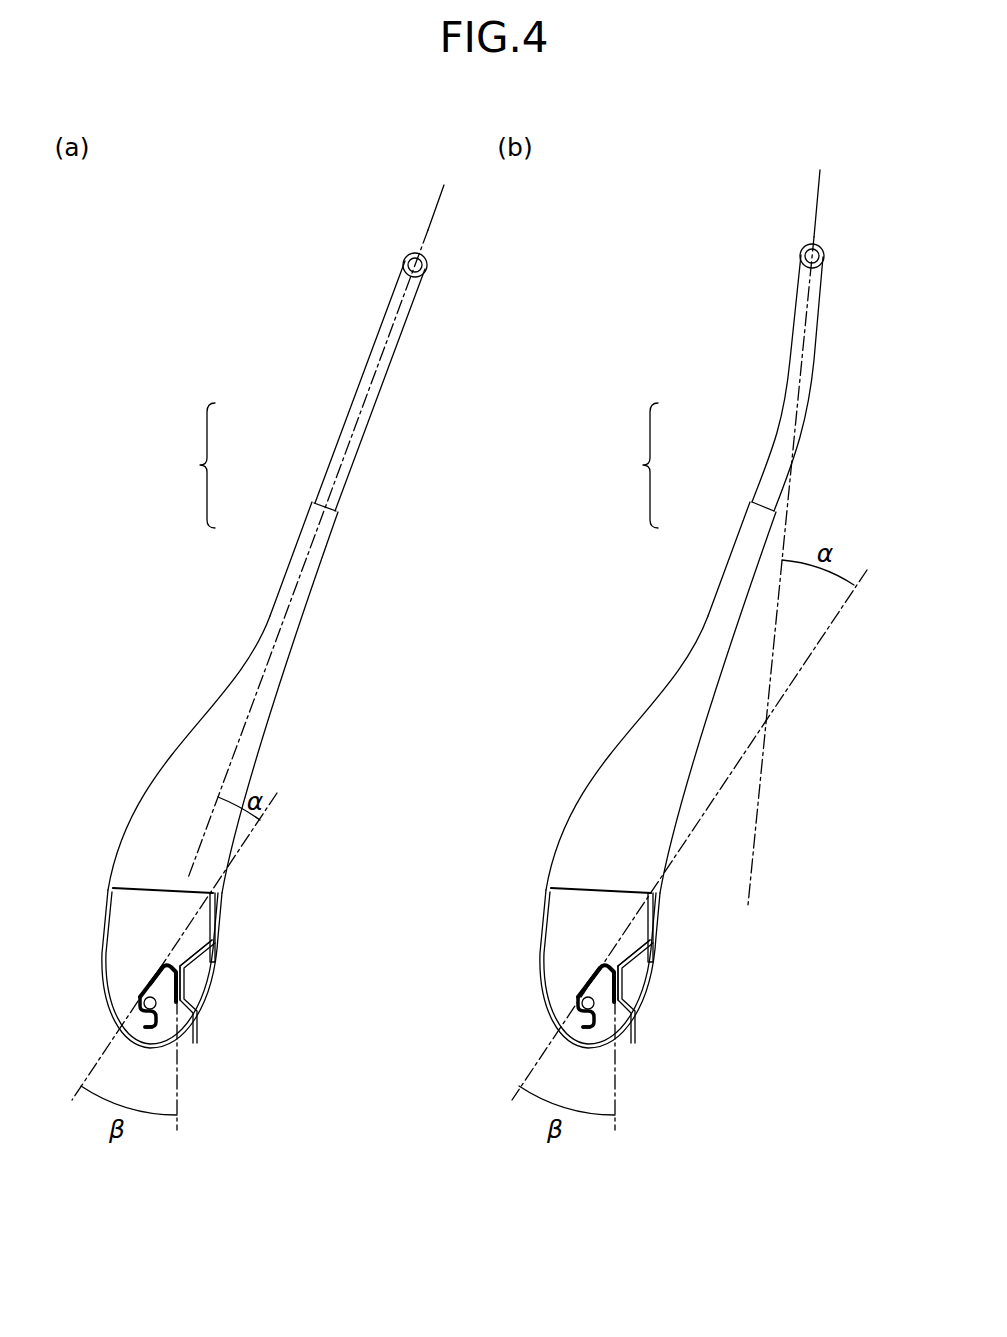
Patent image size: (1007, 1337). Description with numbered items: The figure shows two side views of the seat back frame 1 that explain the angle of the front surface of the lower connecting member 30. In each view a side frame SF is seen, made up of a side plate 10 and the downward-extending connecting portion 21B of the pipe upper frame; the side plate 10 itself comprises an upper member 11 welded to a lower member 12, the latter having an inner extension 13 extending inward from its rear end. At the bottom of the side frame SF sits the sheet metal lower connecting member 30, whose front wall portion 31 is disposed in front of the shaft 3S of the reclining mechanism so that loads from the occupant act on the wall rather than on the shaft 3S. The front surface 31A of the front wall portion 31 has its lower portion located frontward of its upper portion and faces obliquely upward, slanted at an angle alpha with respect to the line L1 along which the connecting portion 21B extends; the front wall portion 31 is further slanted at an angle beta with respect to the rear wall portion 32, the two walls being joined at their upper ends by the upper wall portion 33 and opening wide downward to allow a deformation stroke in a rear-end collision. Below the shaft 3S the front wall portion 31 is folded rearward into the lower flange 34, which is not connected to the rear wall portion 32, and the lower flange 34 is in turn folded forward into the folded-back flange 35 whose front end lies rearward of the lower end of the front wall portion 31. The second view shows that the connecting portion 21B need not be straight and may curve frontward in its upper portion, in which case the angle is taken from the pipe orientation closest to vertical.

The seat back frame 1 is at (214, 604).
The side plate 10 is at (298, 547).
The upper member 11 is at (198, 733).
The lower member 12 is at (203, 1003).
The inner extension 13 is at (192, 962).
The connecting portion 21B is at (343, 443).
The lower connecting member 30 is at (130, 995).
The front wall portion 31 is at (152, 983).
The front surface 31A is at (155, 970).
The rear wall portion 32 is at (179, 988).
The upper wall portion 33 is at (193, 950).
The lower flange 34 is at (143, 1013).
The folded-back flange 35 is at (145, 1028).
The shaft 3S is at (178, 1003).
The side frame SF is at (410, 465).
The line L1 is at (430, 232).